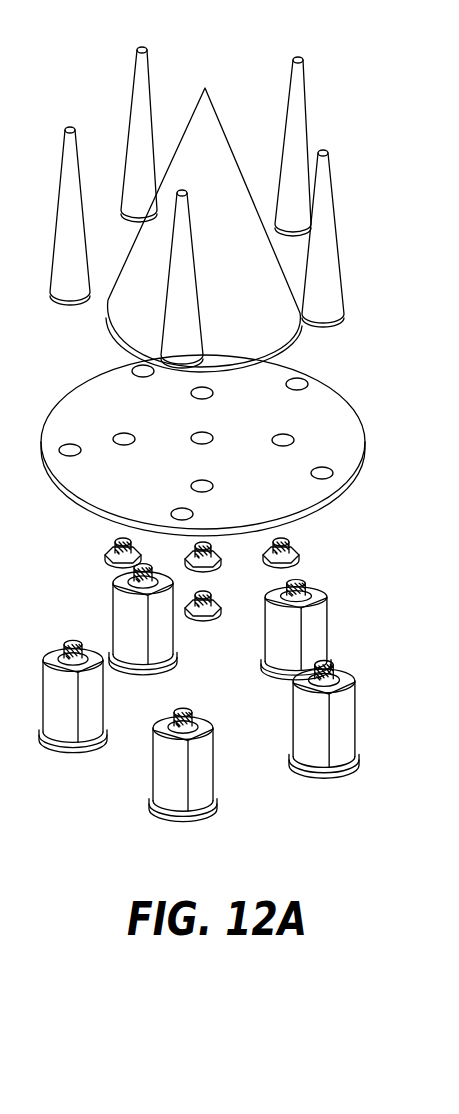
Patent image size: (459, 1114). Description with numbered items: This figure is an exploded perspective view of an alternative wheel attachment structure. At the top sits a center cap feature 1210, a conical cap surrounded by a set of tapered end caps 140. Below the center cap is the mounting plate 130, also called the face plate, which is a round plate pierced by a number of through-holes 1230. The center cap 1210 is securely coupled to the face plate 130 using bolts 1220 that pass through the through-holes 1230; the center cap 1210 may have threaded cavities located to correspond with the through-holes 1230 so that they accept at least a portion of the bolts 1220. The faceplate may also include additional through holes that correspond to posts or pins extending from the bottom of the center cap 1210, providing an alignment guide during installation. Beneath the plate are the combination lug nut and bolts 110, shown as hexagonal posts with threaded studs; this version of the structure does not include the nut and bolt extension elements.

The center cap feature 1210 is at (216, 116).
The end caps 140 is at (333, 214).
The mounting plate 130 is at (337, 497).
The through-holes 1230 is at (128, 445).
The bolts 1220 is at (290, 550).
The combination lug nut and bolts 110 is at (327, 625).